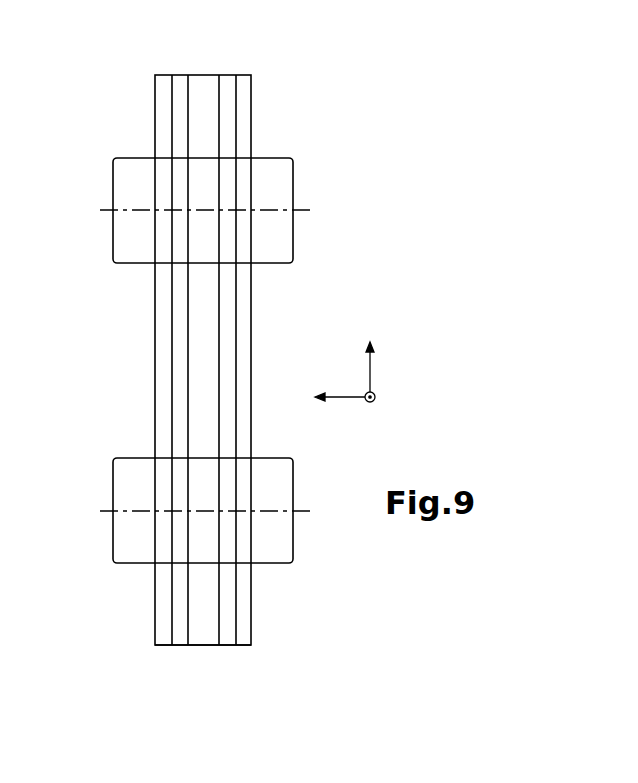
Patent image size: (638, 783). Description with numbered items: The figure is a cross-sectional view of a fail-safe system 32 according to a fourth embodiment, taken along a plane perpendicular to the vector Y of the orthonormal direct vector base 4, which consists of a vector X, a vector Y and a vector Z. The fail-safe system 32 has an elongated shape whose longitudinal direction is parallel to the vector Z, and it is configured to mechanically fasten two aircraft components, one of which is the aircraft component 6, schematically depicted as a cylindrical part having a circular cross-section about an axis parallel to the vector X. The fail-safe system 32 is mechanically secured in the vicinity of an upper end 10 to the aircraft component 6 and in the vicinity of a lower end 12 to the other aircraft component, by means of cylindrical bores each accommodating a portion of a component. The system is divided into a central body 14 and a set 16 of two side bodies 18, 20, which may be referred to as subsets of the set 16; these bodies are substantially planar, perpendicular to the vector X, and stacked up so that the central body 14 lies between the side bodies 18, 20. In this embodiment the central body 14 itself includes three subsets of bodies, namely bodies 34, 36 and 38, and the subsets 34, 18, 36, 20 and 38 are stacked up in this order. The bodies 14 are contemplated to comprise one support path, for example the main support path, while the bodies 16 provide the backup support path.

The orthonormal direct vector base 4 is at (400, 359).
The aircraft component 6 is at (293, 232).
The upper end 10 is at (245, 74).
The lower end 12 is at (250, 645).
The central body 14 is at (171, 59).
The set of two side bodies 16 is at (187, 652).
The side body 18 is at (182, 130).
The side body 20 is at (228, 129).
The fail-safe system 32 is at (330, 67).
The body 34 is at (164, 108).
The body 36 is at (202, 93).
The body 38 is at (244, 108).